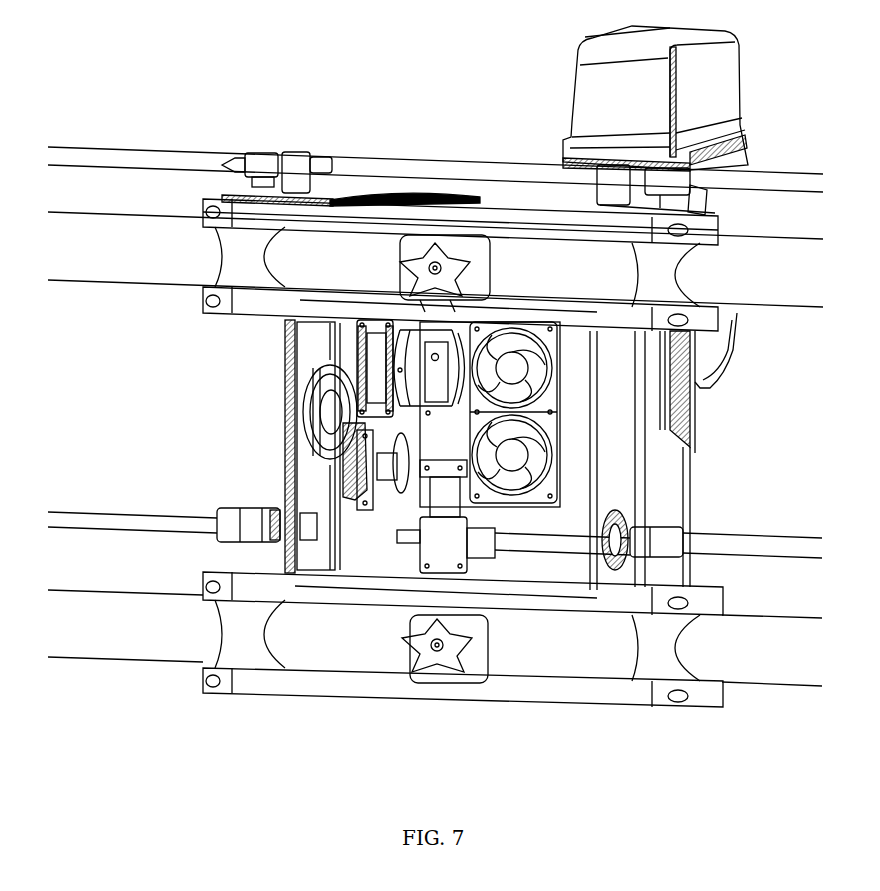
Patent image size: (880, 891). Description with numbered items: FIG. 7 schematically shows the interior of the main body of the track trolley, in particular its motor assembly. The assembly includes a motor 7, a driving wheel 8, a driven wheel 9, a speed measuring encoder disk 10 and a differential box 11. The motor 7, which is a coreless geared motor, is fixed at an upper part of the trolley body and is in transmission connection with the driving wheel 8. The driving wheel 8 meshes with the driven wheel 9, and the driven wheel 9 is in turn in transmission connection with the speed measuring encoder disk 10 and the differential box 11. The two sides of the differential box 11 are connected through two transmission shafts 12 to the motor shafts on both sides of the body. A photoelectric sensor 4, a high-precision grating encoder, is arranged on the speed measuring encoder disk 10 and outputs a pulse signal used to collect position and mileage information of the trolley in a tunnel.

The photoelectric sensor 4 is at (354, 602).
The motor 7 is at (371, 221).
The driving wheel 8 is at (225, 222).
The driven wheel 9 is at (265, 547).
The speed measuring encoder disk 10 is at (437, 623).
The differential box 11 is at (499, 643).
The transmission shaft 12 is at (470, 650).